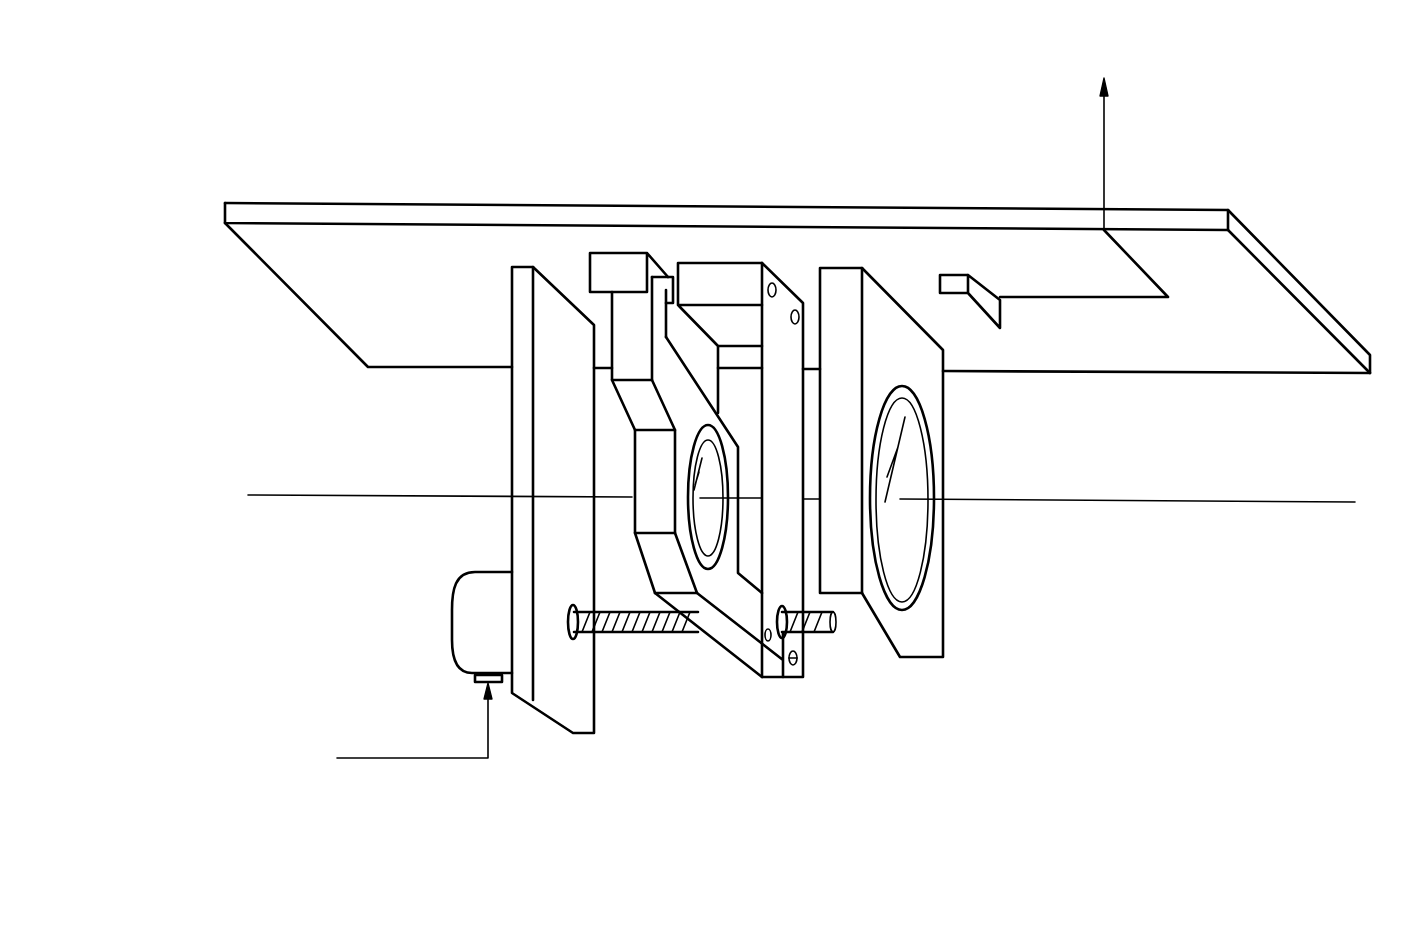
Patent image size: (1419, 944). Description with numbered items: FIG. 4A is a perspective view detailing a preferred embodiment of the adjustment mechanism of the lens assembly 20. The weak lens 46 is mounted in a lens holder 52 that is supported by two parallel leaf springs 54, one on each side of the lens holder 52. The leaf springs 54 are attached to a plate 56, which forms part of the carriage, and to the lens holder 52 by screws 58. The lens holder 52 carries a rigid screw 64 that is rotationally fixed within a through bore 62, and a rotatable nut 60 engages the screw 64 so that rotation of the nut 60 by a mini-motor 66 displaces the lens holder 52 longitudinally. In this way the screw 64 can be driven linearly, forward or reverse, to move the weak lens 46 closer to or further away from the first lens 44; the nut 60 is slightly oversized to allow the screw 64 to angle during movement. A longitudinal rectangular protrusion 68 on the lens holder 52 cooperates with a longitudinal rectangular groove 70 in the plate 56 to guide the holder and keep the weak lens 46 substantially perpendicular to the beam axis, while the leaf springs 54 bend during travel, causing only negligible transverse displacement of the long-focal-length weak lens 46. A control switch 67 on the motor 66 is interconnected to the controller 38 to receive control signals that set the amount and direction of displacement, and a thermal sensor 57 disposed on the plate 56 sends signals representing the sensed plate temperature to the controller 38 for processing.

The lens assembly 20 is at (448, 818).
The controller 38 is at (659, 404).
The first lens 44 is at (905, 552).
The weak lens 46 is at (698, 522).
The lens holder 52 is at (732, 640).
The leaf springs 54 is at (697, 353).
The plate 56 is at (1048, 222).
The thermal sensor 57 is at (961, 275).
The screws 58 is at (780, 323).
The rotatable nut 60 is at (568, 640).
The through bore 62 is at (780, 672).
The screw 64 is at (640, 645).
The mini-motor 66 is at (487, 624).
The control switch 67 is at (477, 687).
The longitudinal rectangular protrusion 68 is at (659, 298).
The longitudinal rectangular groove 70 is at (625, 272).